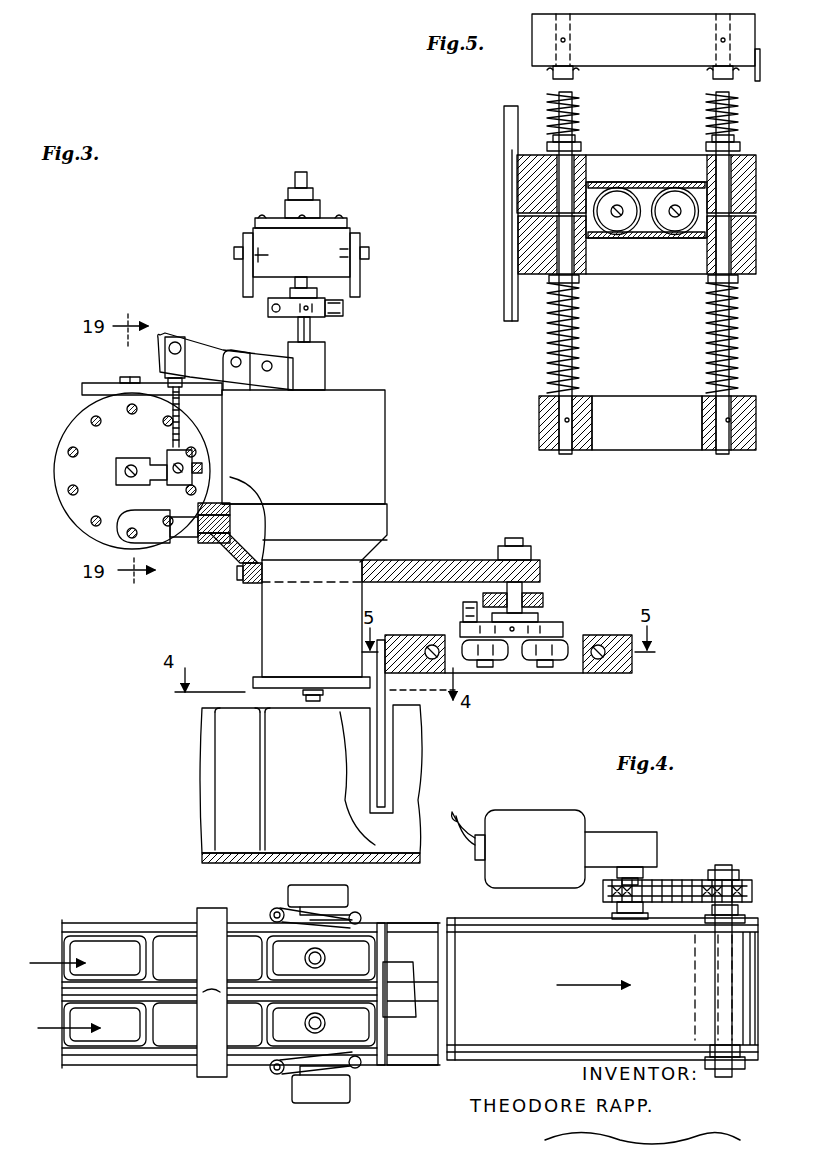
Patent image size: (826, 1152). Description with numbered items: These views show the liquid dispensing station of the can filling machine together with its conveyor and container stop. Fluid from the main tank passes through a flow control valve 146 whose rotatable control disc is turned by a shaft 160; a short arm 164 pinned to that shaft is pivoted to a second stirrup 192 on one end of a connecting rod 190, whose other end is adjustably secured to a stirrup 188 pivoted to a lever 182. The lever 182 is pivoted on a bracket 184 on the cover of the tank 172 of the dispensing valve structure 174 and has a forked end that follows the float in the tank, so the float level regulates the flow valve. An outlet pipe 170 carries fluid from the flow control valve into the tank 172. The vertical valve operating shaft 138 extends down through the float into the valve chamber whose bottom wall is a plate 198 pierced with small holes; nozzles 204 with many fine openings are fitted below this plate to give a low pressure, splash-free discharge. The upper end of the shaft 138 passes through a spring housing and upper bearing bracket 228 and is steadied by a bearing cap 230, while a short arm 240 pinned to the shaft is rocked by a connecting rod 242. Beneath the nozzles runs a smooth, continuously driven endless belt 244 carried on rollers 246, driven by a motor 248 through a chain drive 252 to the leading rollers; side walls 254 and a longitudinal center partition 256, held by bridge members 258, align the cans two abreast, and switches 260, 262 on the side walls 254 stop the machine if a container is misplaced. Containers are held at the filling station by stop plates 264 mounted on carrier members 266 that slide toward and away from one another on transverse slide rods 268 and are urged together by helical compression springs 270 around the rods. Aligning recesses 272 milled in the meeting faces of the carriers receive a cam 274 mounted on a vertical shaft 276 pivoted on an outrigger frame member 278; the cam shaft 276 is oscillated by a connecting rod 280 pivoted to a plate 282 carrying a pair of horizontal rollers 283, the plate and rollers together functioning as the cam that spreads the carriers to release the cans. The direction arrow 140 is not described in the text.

In FIG. 3, the valve operating shaft 138 is at (300, 172).
In FIG. 3, the rotation direction 140 is at (318, 330).
In FIG. 3, the flow control valve 146 is at (60, 424).
In FIG. 3, the shaft 160 is at (124, 473).
In FIG. 3, the short arm 164 is at (155, 460).
In FIG. 3, the outlet pipe 170 is at (182, 523).
In FIG. 3, the tank 172 is at (360, 402).
In FIG. 3, the dispensing valve structure 174 is at (326, 616).
In FIG. 3, the lever 182 is at (210, 348).
In FIG. 3, the bracket 184 is at (232, 350).
In FIG. 3, the stirrup 188 is at (165, 364).
In FIG. 3, the connecting rod 190 is at (181, 405).
In FIG. 3, the second stirrup 192 is at (193, 455).
In FIG. 3, the plate 198 is at (252, 678).
In FIG. 3, the nozzles 204 is at (313, 702).
In FIG. 3, the spring housing and upper bearing bracket 228 is at (338, 236).
In FIG. 3, the bearing cap 230 is at (312, 208).
In FIG. 3, the short arm 240 is at (346, 308).
In FIG. 3, the connecting rod 242 is at (345, 312).
In FIG. 3, the endless belt 244 is at (205, 858).
In FIG. 4, the endless belt 244 is at (516, 966).
In FIG. 4, the rollers 246 is at (700, 954).
In FIG. 4, the motor 248 is at (550, 797).
In FIG. 4, the chain drive 252 is at (695, 880).
In FIG. 4, the side walls 254 is at (113, 924).
In FIG. 4, the center partition 256 is at (382, 980).
In FIG. 4, the bridge members 258 is at (200, 910).
In FIG. 4, the switch 260 is at (340, 895).
In FIG. 4, the switch 262 is at (292, 1098).
In FIG. 3, the stop plates 264 is at (386, 760).
In FIG. 4, the stop plates 264 is at (386, 926).
In FIG. 5, the stop plates 264 is at (504, 300).
In FIG. 5, the carrier members 266 is at (632, 157).
In FIG. 3, the slide rods 268 is at (437, 675).
In FIG. 5, the slide rods 268 is at (712, 316).
In FIG. 5, the helical compression springs 270 is at (708, 74).
In FIG. 5, the aligning recesses 272 is at (701, 181).
In FIG. 3, the cam 274 is at (548, 620).
In FIG. 3, the vertical shaft 276 is at (518, 543).
In FIG. 3, the outrigger frame member 278 is at (541, 570).
In FIG. 3, the connecting rod 280 is at (461, 612).
In FIG. 3, the plate 282 is at (562, 632).
In FIG. 3, the horizontal rollers 283 is at (526, 660).
In FIG. 5, the horizontal rollers 283 is at (672, 193).